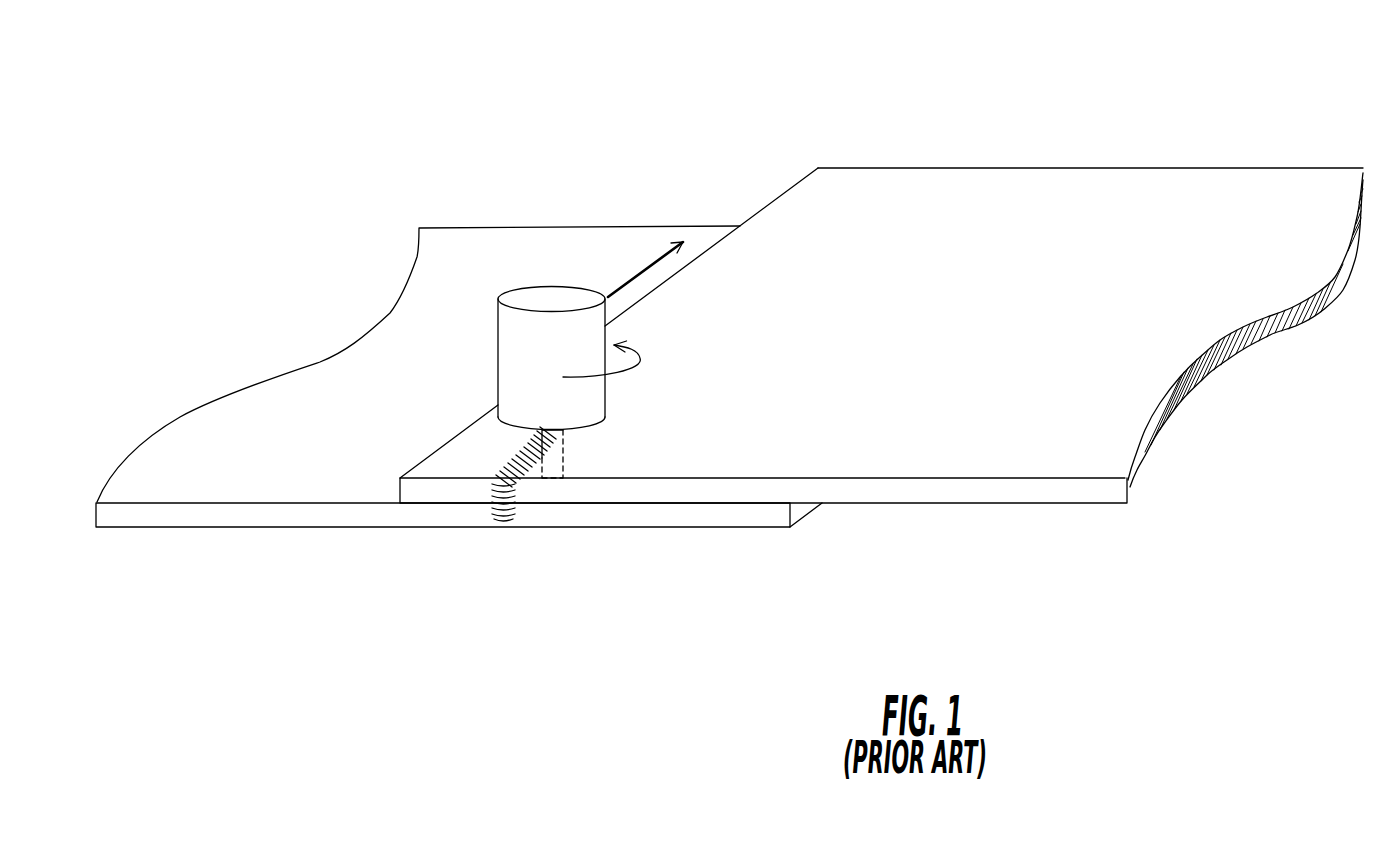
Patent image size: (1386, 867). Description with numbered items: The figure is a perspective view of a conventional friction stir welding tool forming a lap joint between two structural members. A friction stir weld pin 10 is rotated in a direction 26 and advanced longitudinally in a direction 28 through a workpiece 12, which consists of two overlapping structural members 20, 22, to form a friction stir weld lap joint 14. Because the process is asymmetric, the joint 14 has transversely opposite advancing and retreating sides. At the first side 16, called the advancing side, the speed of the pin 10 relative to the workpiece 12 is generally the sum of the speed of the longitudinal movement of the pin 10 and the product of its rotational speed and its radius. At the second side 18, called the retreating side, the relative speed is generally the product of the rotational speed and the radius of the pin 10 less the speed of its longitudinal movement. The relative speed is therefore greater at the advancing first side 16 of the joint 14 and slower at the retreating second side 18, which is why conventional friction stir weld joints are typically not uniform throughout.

The friction stir weld pin 10 is at (563, 455).
The workpiece 12 is at (357, 320).
The friction stir weld lap joint 14 is at (505, 517).
The first side 16 is at (528, 475).
The second side 18 is at (505, 460).
The structural member 20 is at (1045, 185).
The structural member 22 is at (247, 528).
The direction of rotation 26 is at (640, 368).
The direction of longitudinal advancement 28 is at (637, 280).